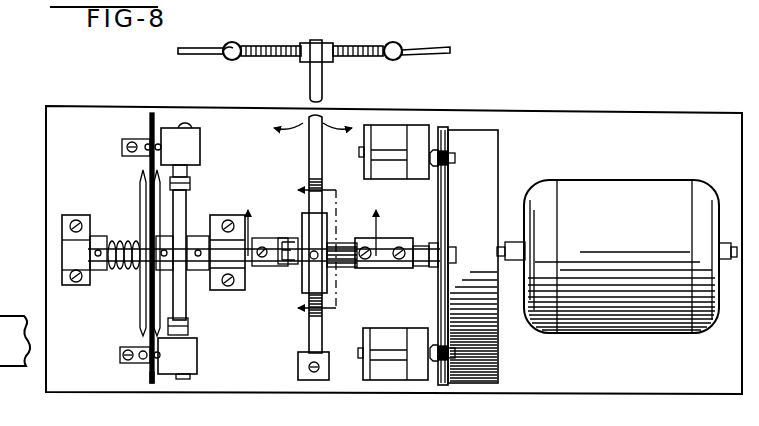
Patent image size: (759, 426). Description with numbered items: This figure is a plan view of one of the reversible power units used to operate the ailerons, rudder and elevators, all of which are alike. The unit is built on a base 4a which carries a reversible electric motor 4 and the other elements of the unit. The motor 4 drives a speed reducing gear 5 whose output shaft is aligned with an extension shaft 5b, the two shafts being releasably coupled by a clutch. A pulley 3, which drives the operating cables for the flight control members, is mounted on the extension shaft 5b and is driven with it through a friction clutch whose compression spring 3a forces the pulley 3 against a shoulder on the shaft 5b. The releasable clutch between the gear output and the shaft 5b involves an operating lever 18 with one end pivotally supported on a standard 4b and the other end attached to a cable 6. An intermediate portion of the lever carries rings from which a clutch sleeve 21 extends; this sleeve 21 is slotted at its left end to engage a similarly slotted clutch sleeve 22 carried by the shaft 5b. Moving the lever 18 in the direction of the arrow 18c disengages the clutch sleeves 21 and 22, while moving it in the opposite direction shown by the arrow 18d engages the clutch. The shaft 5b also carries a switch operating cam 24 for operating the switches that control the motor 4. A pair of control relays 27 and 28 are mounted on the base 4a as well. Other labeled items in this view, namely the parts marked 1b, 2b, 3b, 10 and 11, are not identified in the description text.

The cable 6 is at (200, 54).
The operating lever 18 is at (323, 77).
The arrow 18c is at (343, 124).
The arrow 18d is at (275, 124).
The control relay 28 is at (401, 130).
The control relay 27 is at (389, 380).
The base 4a is at (585, 116).
The guide rod 1b is at (150, 117).
The rod end 2b is at (151, 385).
The pulley 3 is at (139, 201).
The compression spring 3a is at (128, 265).
The blade portion 3b is at (9, 271).
The switch operating cam 24 is at (187, 208).
The direction arrow 10 is at (311, 220).
The reference position line 11 is at (304, 250).
The clutch sleeve 21 is at (296, 242).
The clutch sleeve 22 is at (294, 268).
The speed reducing gear 5 is at (495, 150).
The extension shaft 5b is at (192, 268).
The reversible electric motor 4 is at (612, 188).
The standard 4b is at (302, 355).